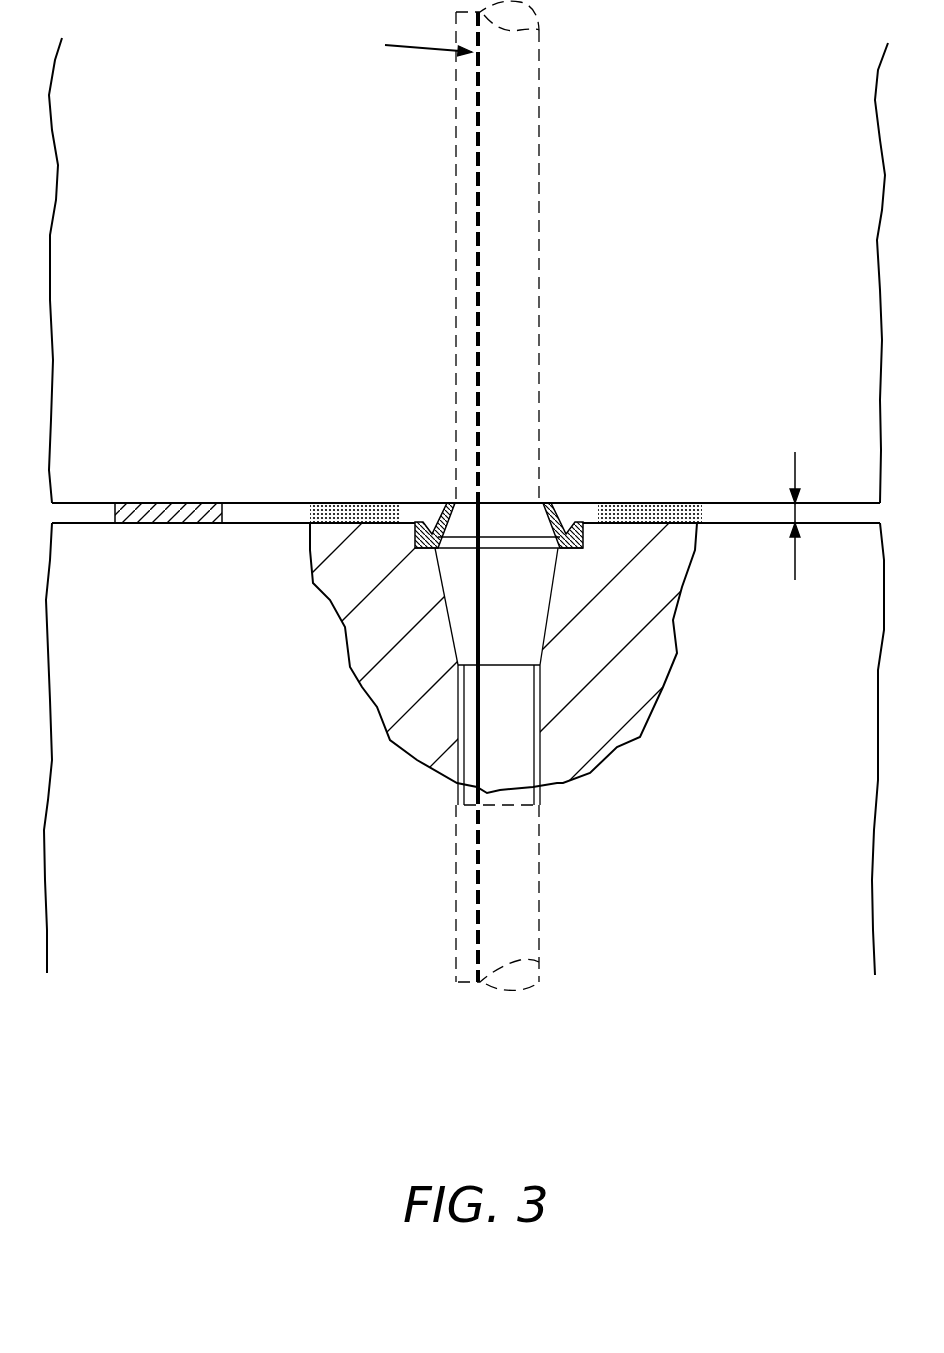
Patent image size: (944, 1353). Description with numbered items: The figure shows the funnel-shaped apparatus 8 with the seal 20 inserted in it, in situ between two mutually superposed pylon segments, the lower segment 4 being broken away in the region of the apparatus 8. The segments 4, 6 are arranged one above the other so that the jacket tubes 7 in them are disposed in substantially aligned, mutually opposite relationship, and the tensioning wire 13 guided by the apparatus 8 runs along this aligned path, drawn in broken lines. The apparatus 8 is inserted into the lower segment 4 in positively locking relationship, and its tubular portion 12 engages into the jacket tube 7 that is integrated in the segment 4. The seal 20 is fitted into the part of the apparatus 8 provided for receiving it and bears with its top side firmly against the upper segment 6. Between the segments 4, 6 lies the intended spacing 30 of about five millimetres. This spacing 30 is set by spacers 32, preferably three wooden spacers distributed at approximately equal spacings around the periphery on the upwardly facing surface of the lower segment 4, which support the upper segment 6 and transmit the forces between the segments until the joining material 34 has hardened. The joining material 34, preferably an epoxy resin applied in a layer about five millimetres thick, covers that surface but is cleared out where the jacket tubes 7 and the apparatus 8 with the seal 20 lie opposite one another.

The lower segment 4 is at (220, 818).
The upper segment 6 is at (220, 208).
The jacket tube 7 is at (490, 208).
The funnel-shaped apparatus 8 is at (493, 605).
The tubular portion 12 is at (488, 736).
The tensioning wire 13 is at (478, 272).
The seal 20 is at (560, 491).
The spacing 30 is at (809, 506).
The spacer 32 is at (167, 490).
The joining material 34 is at (98, 537).